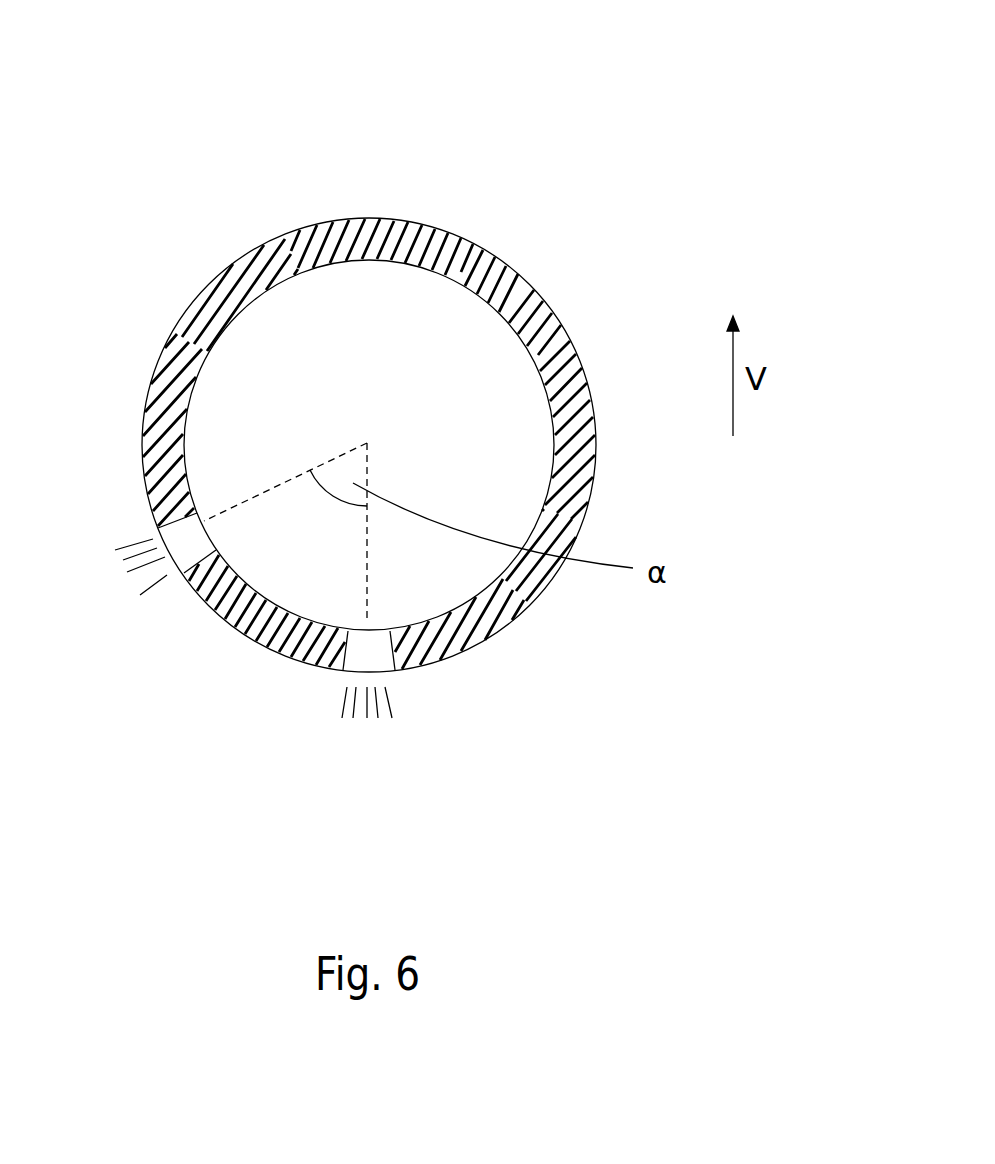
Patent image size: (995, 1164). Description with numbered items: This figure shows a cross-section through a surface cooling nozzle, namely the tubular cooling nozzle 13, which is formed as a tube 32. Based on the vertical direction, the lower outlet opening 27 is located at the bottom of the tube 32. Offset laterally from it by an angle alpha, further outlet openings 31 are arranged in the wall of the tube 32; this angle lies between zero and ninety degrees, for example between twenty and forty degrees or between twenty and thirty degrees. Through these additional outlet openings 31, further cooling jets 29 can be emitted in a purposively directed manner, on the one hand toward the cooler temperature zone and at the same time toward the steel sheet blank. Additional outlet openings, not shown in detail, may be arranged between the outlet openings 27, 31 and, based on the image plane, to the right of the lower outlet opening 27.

The tubular cooling nozzle 13 is at (356, 392).
The tube 32 is at (564, 360).
The further outlet openings 31 is at (183, 537).
The lower outlet opening 27 is at (382, 653).
The further cooling jets 29 is at (233, 656).